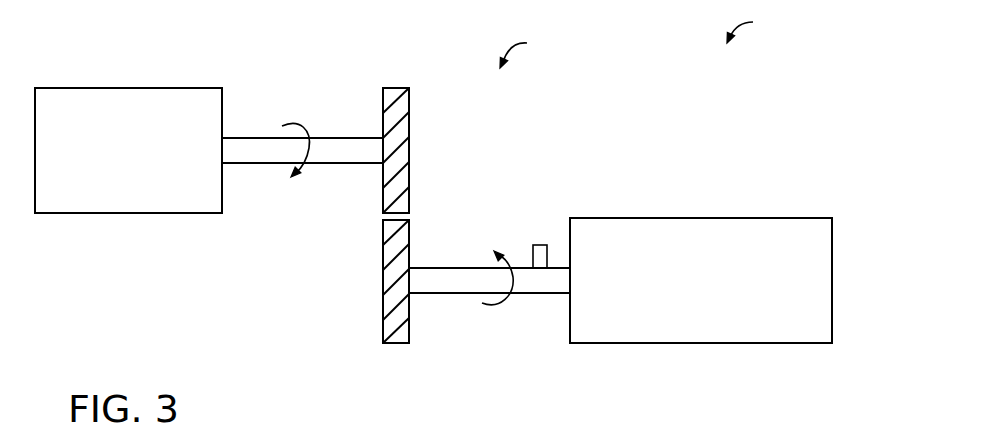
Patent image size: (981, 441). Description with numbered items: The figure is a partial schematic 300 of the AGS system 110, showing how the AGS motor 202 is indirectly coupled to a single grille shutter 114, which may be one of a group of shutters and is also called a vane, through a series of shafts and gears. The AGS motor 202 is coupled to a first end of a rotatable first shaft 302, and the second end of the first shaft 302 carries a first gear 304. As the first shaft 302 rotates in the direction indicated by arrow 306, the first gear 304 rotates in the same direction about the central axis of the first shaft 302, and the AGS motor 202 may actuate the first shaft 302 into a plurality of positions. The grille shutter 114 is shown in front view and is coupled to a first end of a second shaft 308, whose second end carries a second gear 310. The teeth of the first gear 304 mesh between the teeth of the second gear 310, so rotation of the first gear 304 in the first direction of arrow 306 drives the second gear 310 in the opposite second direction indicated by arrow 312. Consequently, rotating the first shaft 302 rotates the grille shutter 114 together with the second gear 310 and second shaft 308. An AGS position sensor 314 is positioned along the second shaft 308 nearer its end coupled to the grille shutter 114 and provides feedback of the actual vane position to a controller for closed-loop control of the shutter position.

The schematic 300 is at (759, 28).
The AGS system 110 is at (533, 52).
The AGS motor 202 is at (128, 150).
The grille shutter 114 is at (701, 280).
The first shaft 302 is at (342, 164).
The first gear 304 is at (409, 100).
The arrow 306 is at (307, 125).
The second shaft 308 is at (420, 268).
The second gear 310 is at (410, 323).
The arrow 312 is at (505, 305).
The AGS position sensor 314 is at (540, 245).